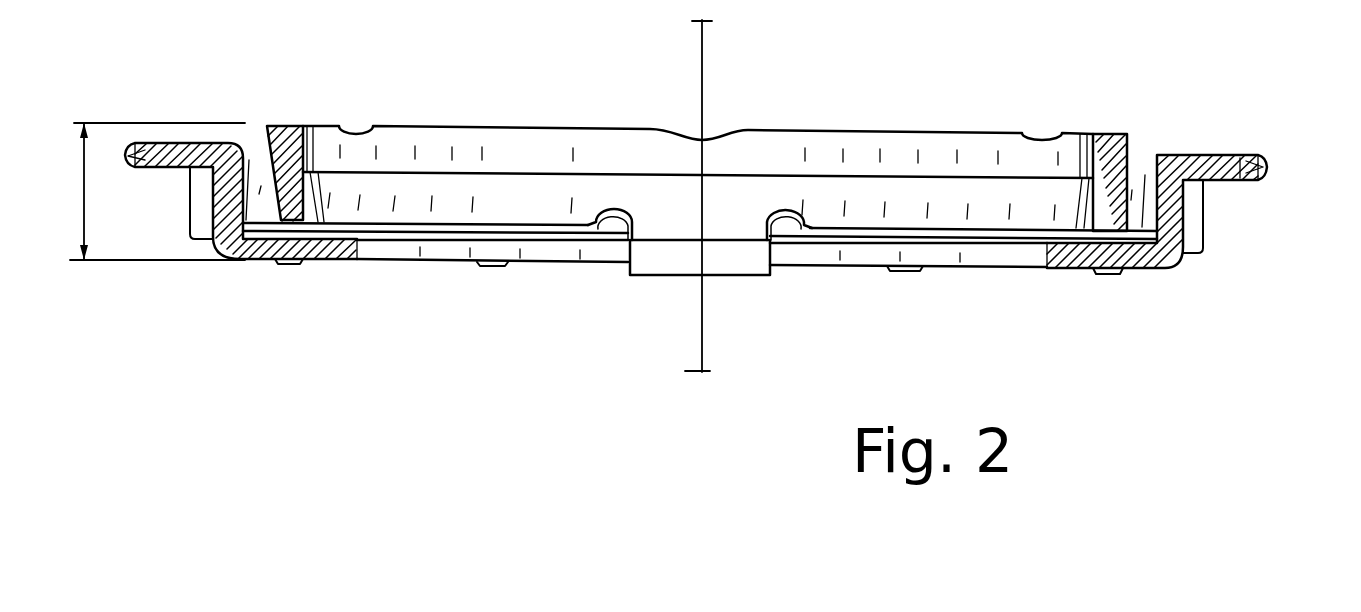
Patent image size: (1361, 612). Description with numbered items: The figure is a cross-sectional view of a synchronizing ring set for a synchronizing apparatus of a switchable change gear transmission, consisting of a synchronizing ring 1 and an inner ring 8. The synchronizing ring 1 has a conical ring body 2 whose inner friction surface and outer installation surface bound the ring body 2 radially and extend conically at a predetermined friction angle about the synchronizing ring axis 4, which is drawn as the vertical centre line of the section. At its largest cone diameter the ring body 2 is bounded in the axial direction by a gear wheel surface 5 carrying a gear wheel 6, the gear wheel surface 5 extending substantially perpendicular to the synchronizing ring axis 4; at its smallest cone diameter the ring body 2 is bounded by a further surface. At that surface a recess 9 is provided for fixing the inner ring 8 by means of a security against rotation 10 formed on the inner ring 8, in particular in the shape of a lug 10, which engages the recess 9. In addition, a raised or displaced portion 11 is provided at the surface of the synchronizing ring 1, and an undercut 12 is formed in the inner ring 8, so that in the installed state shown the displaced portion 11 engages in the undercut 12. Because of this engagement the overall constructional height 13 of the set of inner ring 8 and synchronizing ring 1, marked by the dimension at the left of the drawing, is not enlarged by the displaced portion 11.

The synchronizing ring 1 is at (1203, 163).
The conical ring body 2 is at (698, 177).
The synchronizing ring axis 4 is at (707, 45).
The gear wheel surface 5 is at (1265, 163).
The gear wheel 6 is at (1299, 151).
The inner ring 8 is at (281, 143).
The recess 9 is at (253, 157).
The security against rotation 10 is at (662, 255).
The displaced portion 11 is at (607, 245).
The undercut 12 is at (610, 225).
The overall constructional height 13 is at (80, 188).